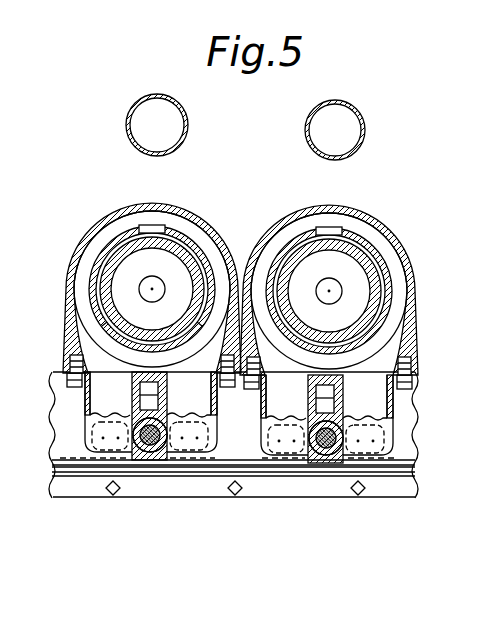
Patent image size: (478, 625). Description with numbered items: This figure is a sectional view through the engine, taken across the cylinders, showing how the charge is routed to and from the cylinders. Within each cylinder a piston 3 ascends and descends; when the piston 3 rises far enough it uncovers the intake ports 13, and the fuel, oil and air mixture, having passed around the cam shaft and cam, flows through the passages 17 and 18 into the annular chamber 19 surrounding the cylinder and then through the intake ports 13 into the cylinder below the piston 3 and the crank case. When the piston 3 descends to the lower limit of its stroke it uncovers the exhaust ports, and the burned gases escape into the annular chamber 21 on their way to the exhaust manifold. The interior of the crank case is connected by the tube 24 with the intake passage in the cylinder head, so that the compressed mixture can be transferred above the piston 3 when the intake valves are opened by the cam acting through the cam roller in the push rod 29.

The piston 3 is at (142, 246).
The intake ports 13 is at (103, 252).
The passages 17 is at (196, 413).
The passages 18 is at (280, 413).
The annular chamber 19 is at (80, 283).
The annular chamber 21 is at (209, 415).
The tube 24 is at (300, 123).
The push rod 29 is at (150, 452).